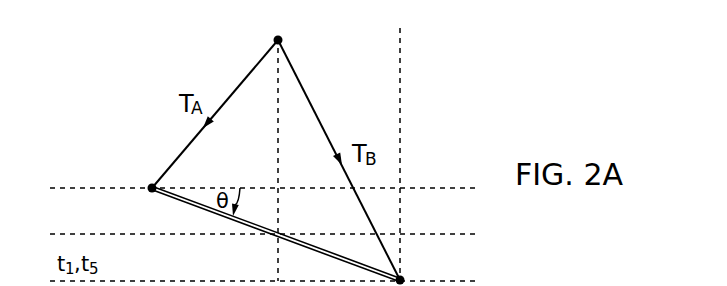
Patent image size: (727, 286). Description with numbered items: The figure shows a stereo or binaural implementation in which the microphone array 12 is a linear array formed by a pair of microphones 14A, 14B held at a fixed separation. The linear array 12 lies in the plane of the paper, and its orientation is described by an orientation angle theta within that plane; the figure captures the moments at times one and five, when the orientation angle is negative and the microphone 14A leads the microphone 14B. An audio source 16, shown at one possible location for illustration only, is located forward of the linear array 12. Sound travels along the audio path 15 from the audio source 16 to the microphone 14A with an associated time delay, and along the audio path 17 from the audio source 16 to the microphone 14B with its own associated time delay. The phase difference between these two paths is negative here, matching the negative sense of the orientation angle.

The microphone array 12 is at (233, 247).
The microphone 14A is at (146, 184).
The microphone 14B is at (404, 277).
The audio path 15 is at (242, 81).
The audio source 16 is at (286, 37).
The audio path 17 is at (313, 108).